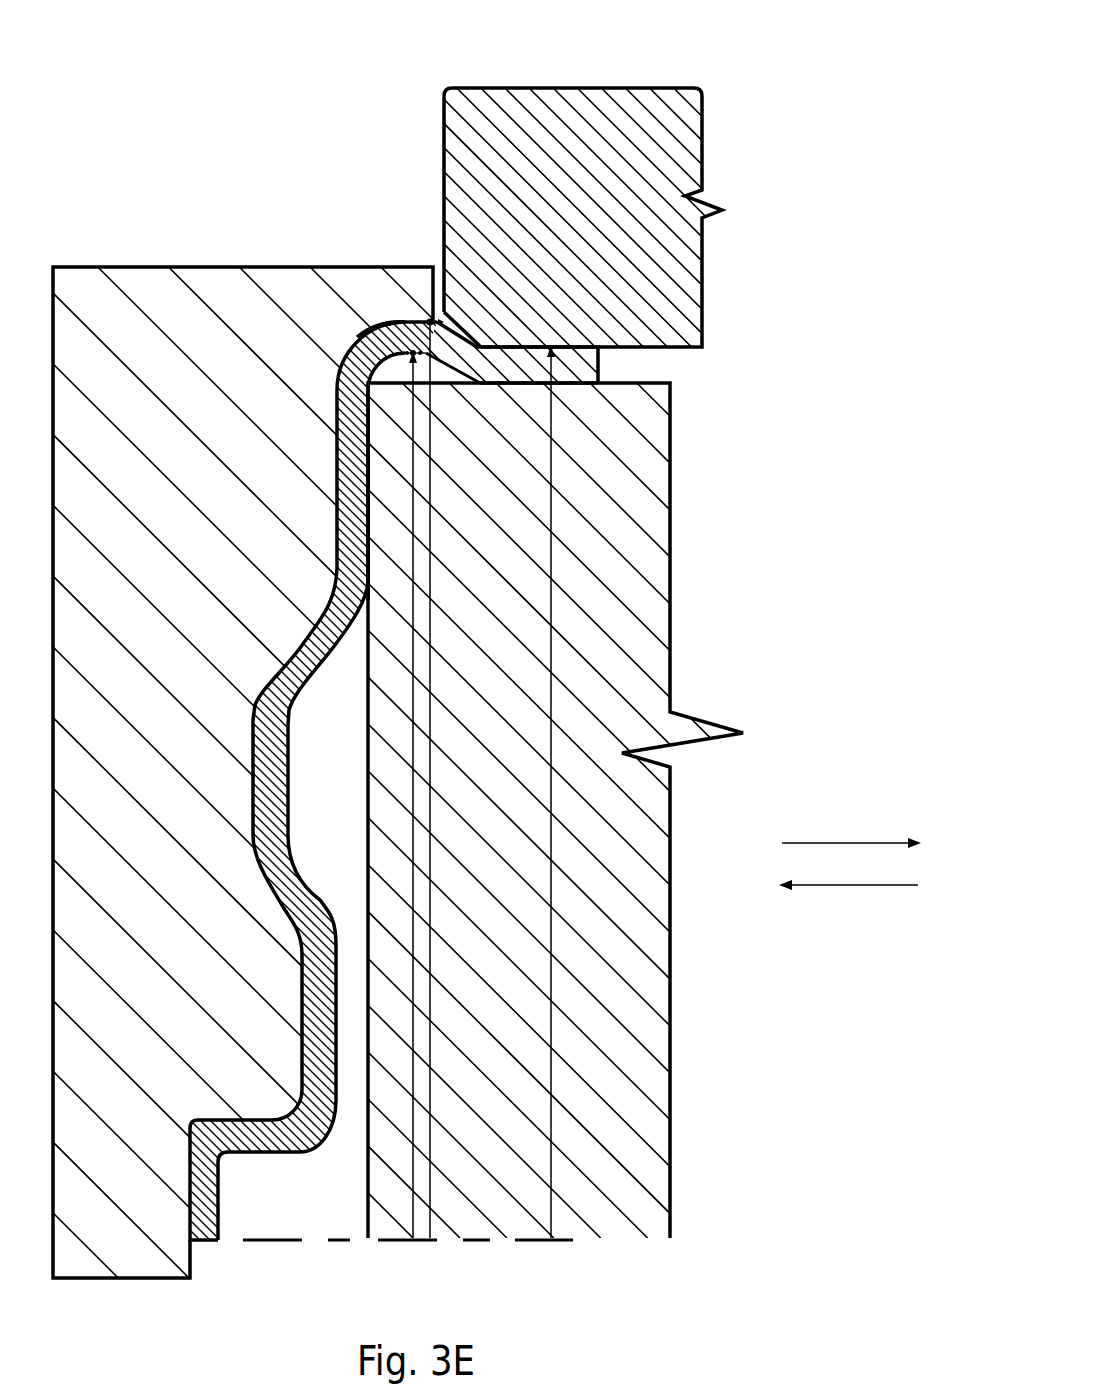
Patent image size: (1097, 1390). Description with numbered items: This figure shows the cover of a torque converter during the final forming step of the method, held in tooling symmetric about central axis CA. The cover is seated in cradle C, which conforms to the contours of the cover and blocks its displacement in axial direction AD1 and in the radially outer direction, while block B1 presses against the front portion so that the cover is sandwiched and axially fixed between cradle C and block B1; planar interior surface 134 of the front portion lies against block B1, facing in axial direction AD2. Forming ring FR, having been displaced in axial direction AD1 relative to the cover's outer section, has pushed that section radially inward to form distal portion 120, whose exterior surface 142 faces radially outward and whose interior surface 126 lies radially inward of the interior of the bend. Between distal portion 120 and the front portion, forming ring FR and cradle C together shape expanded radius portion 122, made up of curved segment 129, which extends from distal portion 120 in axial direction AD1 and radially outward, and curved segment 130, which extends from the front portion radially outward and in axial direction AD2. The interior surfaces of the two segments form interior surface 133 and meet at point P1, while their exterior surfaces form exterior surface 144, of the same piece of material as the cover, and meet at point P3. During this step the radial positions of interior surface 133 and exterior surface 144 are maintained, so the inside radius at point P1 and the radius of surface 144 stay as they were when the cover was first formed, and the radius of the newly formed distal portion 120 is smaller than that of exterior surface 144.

The cradle C is at (135, 267).
The curved segment 130 is at (357, 352).
The exterior surface 144 is at (407, 320).
The expanded radius portion 122 is at (372, 330).
The point P1 is at (390, 317).
The point P3 is at (430, 320).
The interior surface 133 is at (410, 356).
The forming ring FR is at (655, 87).
The exterior surface 142 is at (515, 349).
The distal portion 120 is at (564, 365).
The curved segment 129 is at (462, 336).
The block B1 is at (670, 898).
The interior surface 126 is at (525, 384).
The planar interior surface 134 is at (370, 509).
The central axis CA is at (537, 1240).
The axial direction AD2 is at (824, 843).
The axial direction AD1 is at (848, 885).